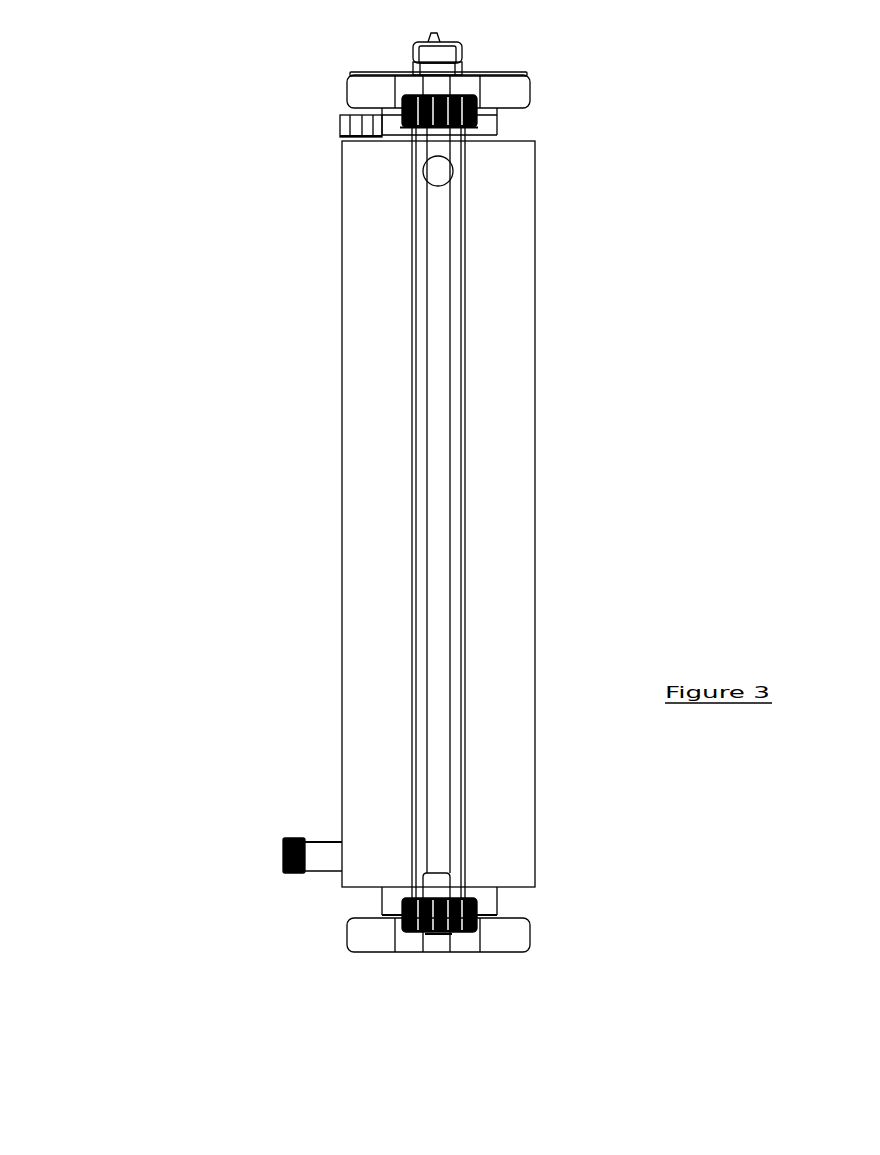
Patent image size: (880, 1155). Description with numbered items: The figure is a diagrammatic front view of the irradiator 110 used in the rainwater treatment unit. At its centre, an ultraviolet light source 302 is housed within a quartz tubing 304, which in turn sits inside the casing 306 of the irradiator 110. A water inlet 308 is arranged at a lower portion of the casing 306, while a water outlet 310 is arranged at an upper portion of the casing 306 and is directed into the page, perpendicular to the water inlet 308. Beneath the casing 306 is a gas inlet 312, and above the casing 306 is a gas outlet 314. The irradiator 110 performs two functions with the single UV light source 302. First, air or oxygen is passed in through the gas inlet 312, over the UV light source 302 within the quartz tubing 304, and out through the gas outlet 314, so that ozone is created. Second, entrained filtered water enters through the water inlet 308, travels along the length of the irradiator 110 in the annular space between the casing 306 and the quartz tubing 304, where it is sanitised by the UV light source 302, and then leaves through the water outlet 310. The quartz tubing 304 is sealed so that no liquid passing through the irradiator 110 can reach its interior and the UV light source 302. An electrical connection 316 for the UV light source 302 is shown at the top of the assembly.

The irradiator 110 is at (138, 112).
The ultraviolet (UV) light source 302 is at (437, 546).
The quartz tubing 304 is at (463, 437).
The casing 306 is at (342, 402).
The water inlet 308 is at (283, 853).
The water outlet 310 is at (438, 172).
The gas inlet 312 is at (440, 928).
The gas outlet 314 is at (340, 124).
The electrical connection 316 is at (442, 33).